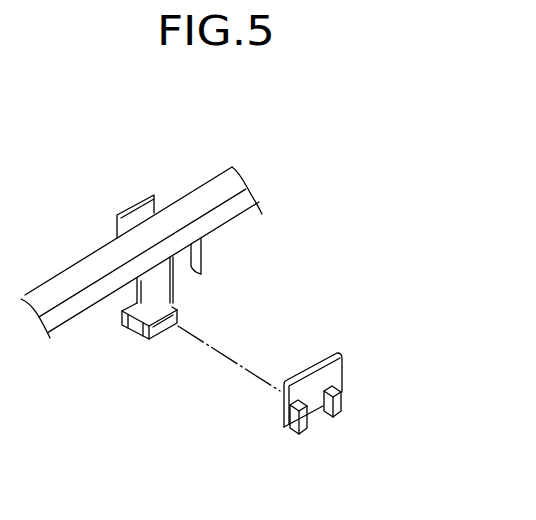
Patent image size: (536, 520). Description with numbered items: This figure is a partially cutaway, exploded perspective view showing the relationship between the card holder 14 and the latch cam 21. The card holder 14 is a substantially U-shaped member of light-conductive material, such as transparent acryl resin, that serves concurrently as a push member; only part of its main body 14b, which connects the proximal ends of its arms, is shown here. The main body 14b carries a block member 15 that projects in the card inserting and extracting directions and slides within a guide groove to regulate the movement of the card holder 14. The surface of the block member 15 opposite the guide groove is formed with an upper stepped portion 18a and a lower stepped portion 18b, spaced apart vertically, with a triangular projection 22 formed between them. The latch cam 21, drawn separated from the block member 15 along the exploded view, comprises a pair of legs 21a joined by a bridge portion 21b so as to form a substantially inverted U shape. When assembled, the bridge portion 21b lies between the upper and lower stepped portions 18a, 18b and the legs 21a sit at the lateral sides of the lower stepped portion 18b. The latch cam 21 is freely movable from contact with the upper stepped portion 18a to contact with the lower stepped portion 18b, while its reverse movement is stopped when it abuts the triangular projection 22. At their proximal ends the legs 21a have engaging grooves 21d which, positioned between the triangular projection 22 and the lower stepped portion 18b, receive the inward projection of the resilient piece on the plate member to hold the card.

The card holder 14 is at (247, 288).
The main body 14b is at (200, 206).
The triangular projection 22 is at (153, 263).
The upper stepped portion 18a is at (207, 260).
The lower stepped portion 18b is at (178, 302).
The block member 15 is at (121, 327).
The latch cam 21 is at (277, 393).
The bridge portion 21b is at (340, 366).
The legs 21a is at (345, 408).
The engaging grooves 21d is at (339, 393).